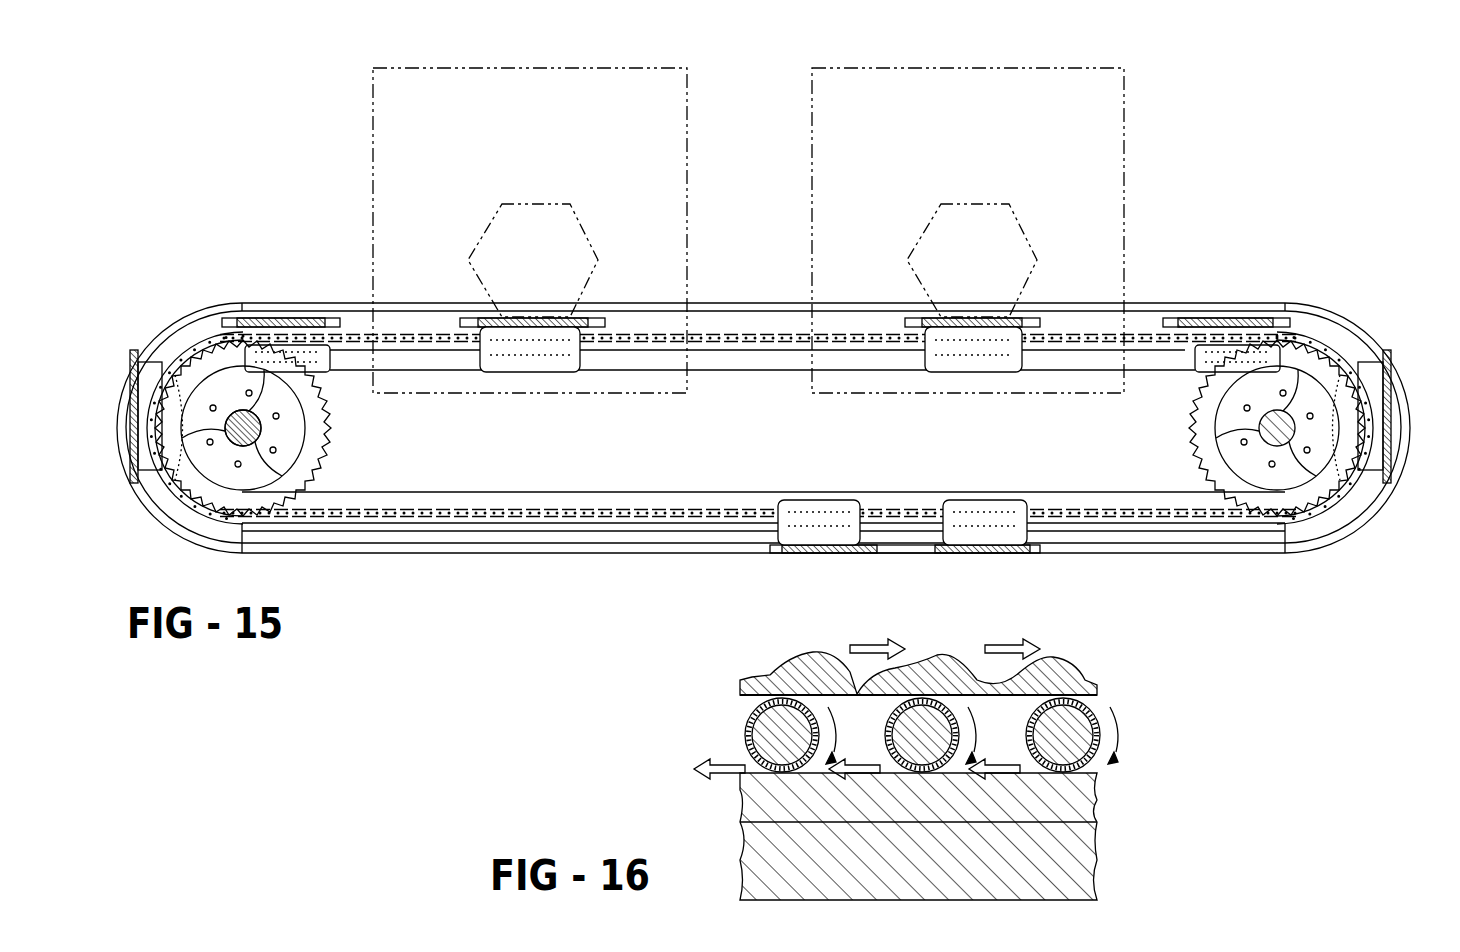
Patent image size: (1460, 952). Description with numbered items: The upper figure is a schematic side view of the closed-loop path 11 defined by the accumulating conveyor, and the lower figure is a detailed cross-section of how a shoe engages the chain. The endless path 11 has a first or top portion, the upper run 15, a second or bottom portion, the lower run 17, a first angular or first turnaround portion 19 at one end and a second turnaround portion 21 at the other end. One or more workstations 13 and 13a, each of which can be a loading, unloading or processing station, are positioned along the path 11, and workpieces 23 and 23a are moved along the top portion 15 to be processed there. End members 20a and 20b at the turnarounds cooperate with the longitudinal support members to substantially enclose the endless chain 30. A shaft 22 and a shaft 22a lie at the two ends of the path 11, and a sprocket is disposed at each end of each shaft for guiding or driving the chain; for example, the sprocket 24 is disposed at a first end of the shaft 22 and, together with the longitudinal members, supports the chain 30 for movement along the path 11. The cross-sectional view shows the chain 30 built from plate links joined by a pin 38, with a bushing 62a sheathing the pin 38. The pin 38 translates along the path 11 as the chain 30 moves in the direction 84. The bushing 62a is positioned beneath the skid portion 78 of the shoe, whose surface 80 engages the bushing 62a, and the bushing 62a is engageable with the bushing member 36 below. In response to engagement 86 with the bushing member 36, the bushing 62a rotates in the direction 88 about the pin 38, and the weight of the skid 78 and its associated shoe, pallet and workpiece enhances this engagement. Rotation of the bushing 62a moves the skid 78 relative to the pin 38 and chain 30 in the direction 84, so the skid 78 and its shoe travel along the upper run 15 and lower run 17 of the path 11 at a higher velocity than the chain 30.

In FIG. 15, the path 11 is at (1292, 224).
In FIG. 15, the workstation 13 is at (373, 149).
In FIG. 15, the workstation 13a is at (812, 150).
In FIG. 15, the upper run 15 is at (1185, 304).
In FIG. 15, the lower run 17 is at (1212, 553).
In FIG. 15, the first turnaround portion 19 is at (146, 325).
In FIG. 15, the end member 20a is at (1378, 395).
In FIG. 15, the end member 20b is at (245, 303).
In FIG. 15, the second turnaround portion 21 is at (1358, 312).
In FIG. 15, the shaft 22 is at (262, 432).
In FIG. 15, the shaft 22a is at (1195, 437).
In FIG. 15, the workpiece 23 is at (546, 262).
In FIG. 15, the workpiece 23a is at (991, 262).
In FIG. 15, the sprocket 24 is at (322, 405).
In FIG. 15, the chain 30 is at (428, 518).
In FIG. 16, the bushing member 36 is at (1097, 800).
In FIG. 16, the pin 38 is at (775, 742).
In FIG. 16, the bushing 62a is at (748, 720).
In FIG. 16, the skid portion 78 is at (935, 665).
In FIG. 16, the surface 80 is at (850, 700).
In FIG. 16, the direction 84 is at (878, 648).
In FIG. 16, the engagement 86 is at (730, 772).
In FIG. 16, the direction 88 is at (860, 700).